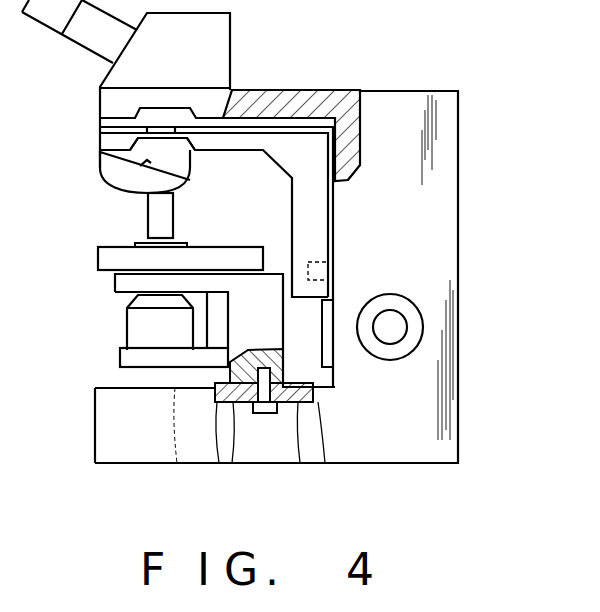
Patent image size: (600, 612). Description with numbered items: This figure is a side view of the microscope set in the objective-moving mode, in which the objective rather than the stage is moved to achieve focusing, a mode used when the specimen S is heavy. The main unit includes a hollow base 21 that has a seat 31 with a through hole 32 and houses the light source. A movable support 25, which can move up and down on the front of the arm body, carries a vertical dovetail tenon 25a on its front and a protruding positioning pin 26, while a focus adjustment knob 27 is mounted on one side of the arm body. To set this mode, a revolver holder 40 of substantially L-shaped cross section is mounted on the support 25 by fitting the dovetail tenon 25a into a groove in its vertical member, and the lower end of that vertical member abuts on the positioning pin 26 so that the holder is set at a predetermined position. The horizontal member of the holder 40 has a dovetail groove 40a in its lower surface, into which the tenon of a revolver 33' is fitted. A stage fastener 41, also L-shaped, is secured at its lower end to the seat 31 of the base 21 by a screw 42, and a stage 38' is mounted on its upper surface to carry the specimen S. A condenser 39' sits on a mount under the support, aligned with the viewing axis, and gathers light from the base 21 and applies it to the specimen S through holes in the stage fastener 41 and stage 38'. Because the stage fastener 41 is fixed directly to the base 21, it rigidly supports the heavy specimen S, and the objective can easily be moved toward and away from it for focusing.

The base 21 is at (122, 450).
The movable support 25 is at (340, 350).
The dovetail tenon 25a is at (340, 302).
The positioning pin 26 is at (303, 300).
The focus adjustment knob 27 is at (392, 327).
The seat 31 is at (237, 403).
The through hole 32 is at (300, 405).
The revolver 33' is at (107, 191).
The stage 38' is at (146, 248).
The condenser 39' is at (141, 331).
The revolver holder 40 is at (289, 210).
The dovetail groove 40a is at (190, 153).
The stage fastener 41 is at (123, 285).
The screw 42 is at (266, 417).
The specimen S is at (143, 243).